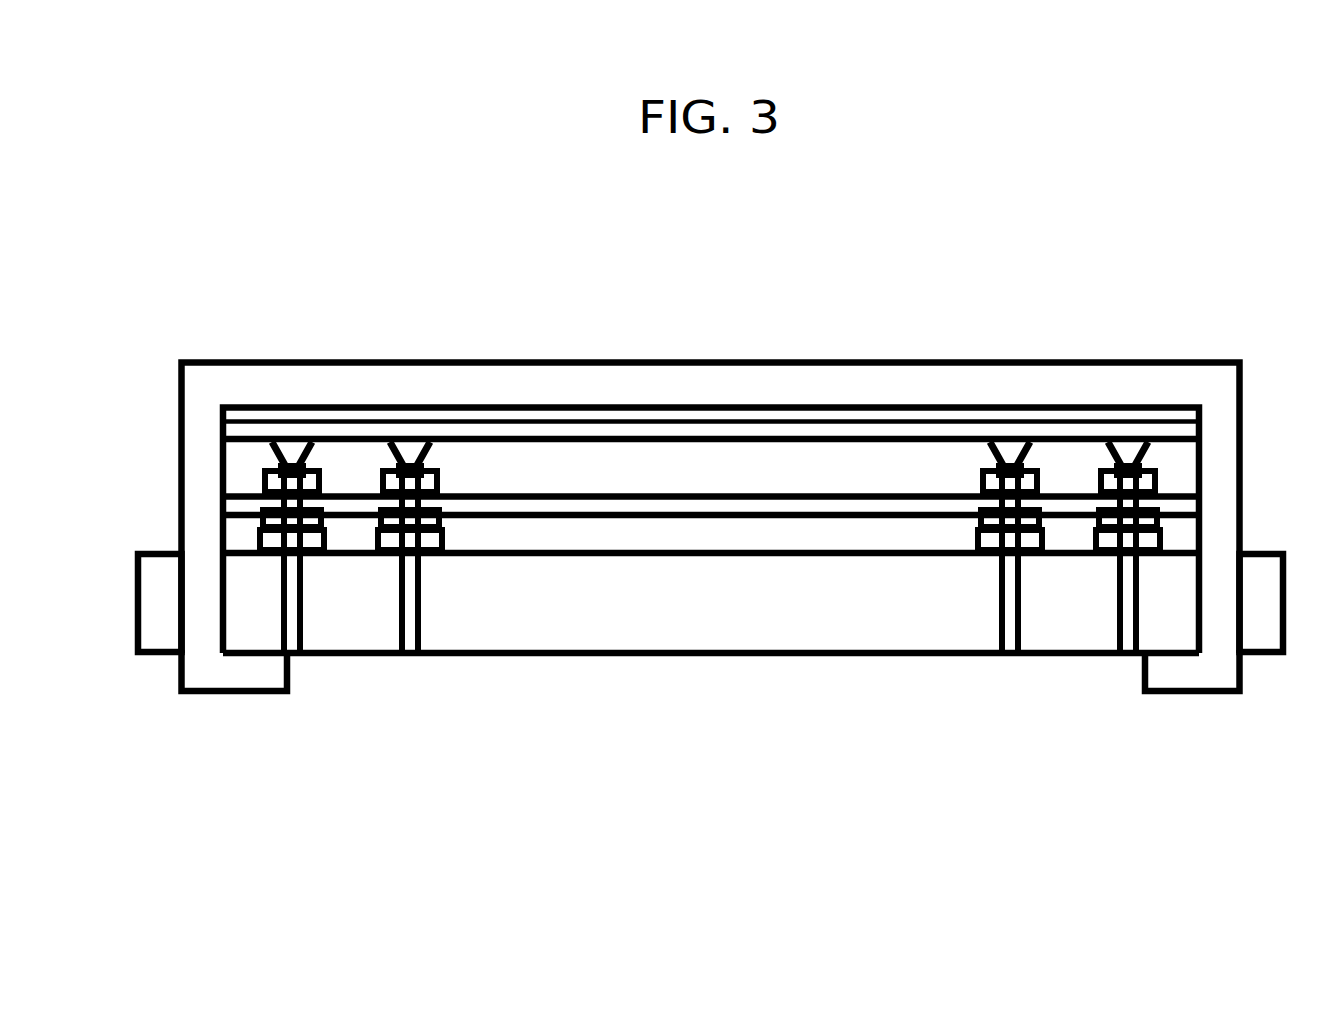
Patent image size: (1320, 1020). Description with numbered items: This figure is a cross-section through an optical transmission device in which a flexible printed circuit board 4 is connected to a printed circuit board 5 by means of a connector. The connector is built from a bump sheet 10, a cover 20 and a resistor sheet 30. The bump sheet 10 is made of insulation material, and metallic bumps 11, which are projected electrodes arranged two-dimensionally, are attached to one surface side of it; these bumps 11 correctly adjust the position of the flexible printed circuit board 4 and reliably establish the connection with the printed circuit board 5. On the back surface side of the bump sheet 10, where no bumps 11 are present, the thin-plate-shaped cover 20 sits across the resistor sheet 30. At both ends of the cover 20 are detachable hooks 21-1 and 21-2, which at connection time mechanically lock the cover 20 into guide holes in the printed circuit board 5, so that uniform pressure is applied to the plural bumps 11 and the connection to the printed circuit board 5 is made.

The flexible printed circuit board 4 is at (937, 490).
The printed circuit board 5 is at (800, 657).
The bump sheet 10 is at (219, 437).
The bumps 11 is at (428, 455).
The cover 20 is at (802, 358).
The hook 21-1 is at (1197, 695).
The hook 21-2 is at (222, 695).
The resistor sheet 30 is at (1202, 417).